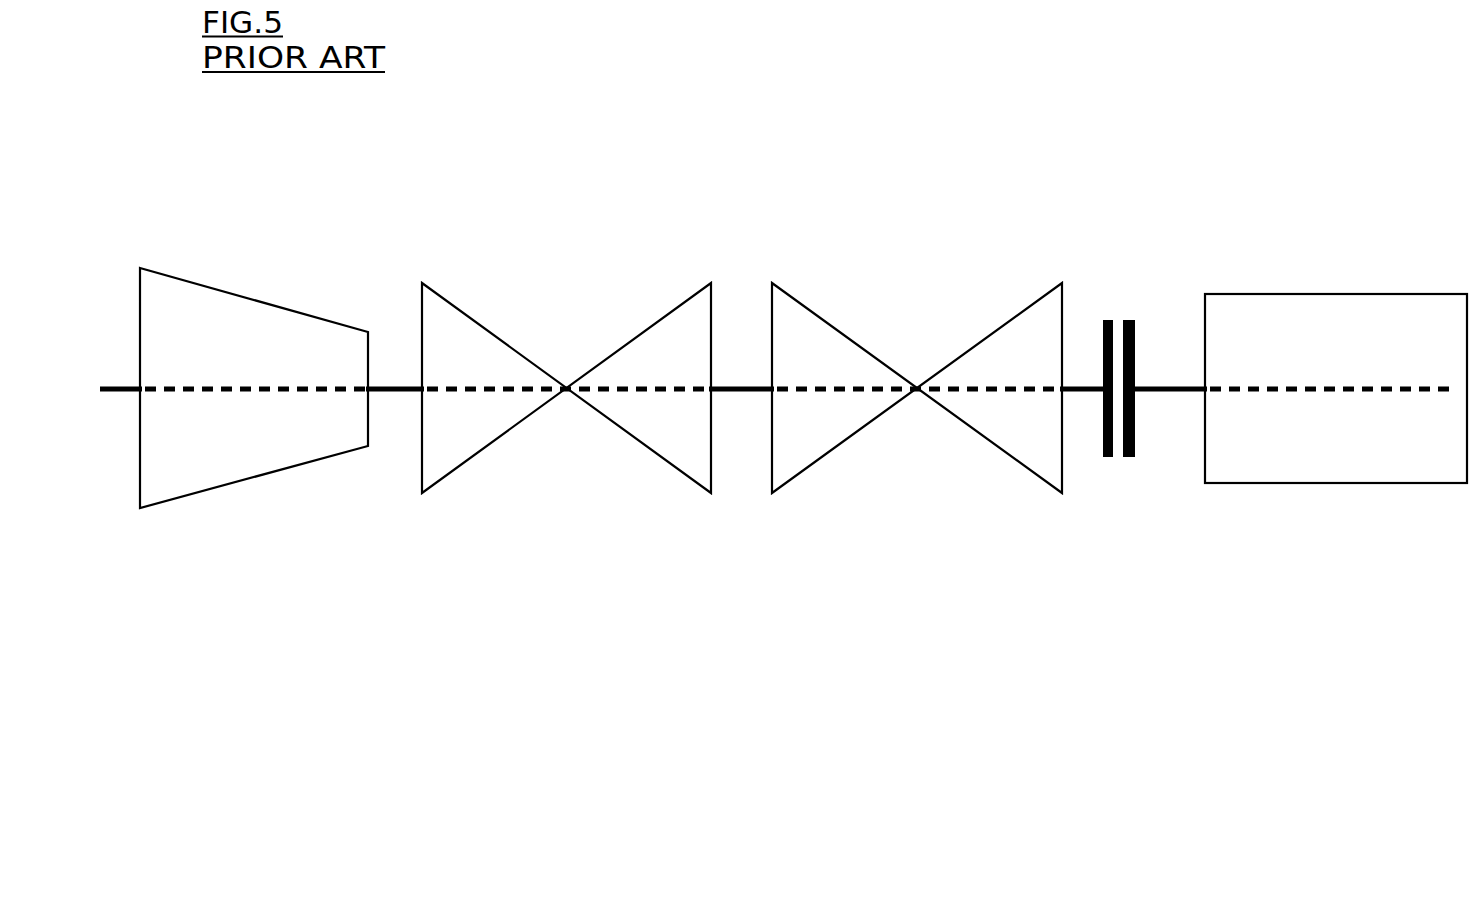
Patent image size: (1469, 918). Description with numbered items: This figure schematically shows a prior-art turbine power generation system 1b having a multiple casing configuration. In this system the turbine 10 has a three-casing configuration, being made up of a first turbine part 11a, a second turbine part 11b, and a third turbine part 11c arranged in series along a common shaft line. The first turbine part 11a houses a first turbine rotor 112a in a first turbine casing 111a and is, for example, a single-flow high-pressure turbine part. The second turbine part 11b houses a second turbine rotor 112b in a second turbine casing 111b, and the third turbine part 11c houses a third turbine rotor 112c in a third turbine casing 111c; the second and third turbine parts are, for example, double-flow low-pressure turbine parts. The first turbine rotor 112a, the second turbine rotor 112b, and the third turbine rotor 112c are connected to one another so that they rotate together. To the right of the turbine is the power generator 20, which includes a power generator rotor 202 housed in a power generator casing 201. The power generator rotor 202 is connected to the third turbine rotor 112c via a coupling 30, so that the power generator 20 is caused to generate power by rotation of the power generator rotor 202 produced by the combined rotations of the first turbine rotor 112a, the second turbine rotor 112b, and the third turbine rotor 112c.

The turbine power generation system 1b is at (475, 116).
The turbine 10 is at (875, 225).
The first turbine part 11a is at (282, 306).
The second turbine part 11b is at (506, 340).
The third turbine part 11c is at (842, 323).
The first turbine casing 111a is at (301, 447).
The first turbine rotor 112a is at (219, 390).
The second turbine casing 111b is at (645, 450).
The second turbine rotor 112b is at (493, 391).
The third turbine casing 111c is at (995, 450).
The third turbine rotor 112c is at (843, 391).
The coupling 30 is at (1119, 320).
The power generator 20 is at (1320, 294).
The power generator casing 201 is at (1413, 445).
The power generator rotor 202 is at (1265, 393).